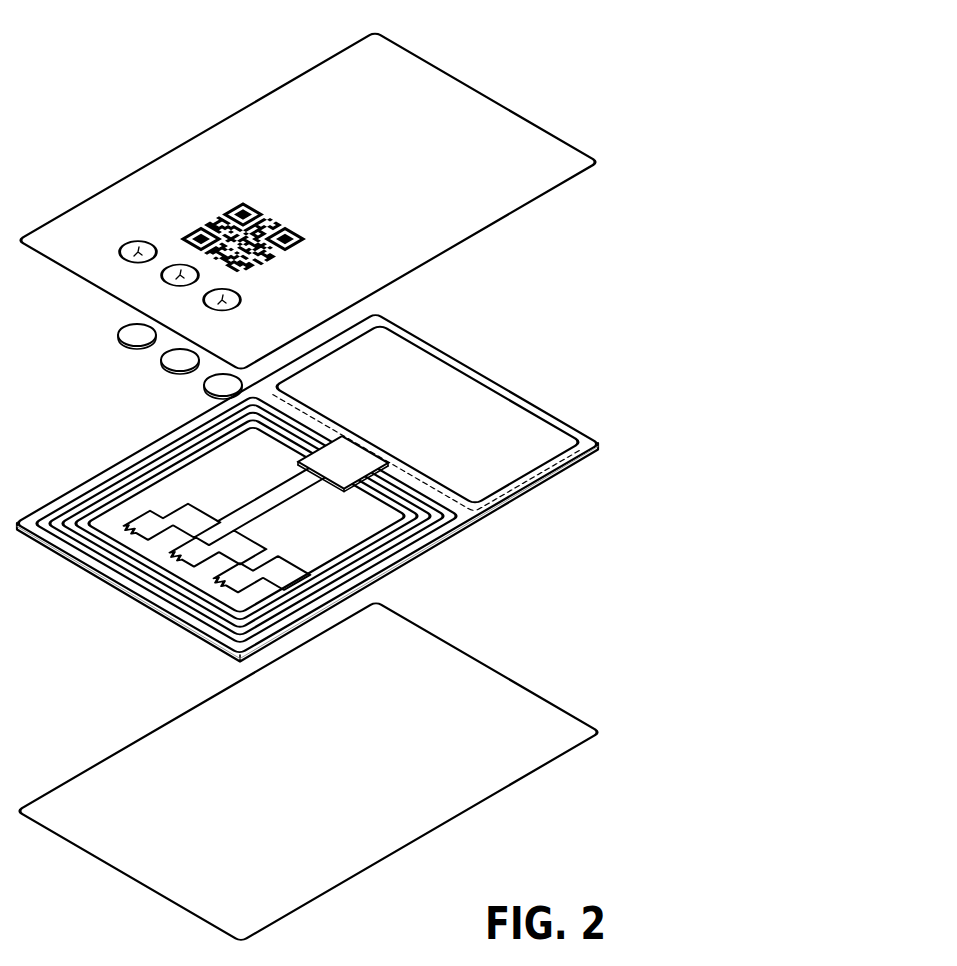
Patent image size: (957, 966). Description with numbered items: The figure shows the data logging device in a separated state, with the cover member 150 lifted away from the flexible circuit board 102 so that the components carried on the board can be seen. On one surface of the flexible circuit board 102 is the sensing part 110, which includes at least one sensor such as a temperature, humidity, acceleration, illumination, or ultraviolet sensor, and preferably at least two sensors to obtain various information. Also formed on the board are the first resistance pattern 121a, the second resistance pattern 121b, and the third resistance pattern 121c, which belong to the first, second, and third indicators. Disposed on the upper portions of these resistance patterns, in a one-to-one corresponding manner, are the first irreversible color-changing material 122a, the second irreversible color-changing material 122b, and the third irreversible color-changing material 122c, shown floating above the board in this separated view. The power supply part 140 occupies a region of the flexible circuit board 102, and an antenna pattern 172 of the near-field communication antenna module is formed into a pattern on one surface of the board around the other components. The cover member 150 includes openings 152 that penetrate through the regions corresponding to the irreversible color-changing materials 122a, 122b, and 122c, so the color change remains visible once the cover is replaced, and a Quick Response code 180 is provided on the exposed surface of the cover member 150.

The flexible circuit board 102 is at (493, 355).
The sensing part 110 is at (361, 432).
The first resistance pattern 121a is at (131, 533).
The second resistance pattern 121b is at (178, 560).
The third resistance pattern 121c is at (219, 585).
The first irreversible color-changing material 122a is at (115, 331).
The second irreversible color-changing material 122b is at (160, 357).
The third irreversible color-changing material 122c is at (205, 382).
The power supply part 140 is at (531, 427).
The cover member 150 is at (491, 76).
The openings 152 is at (214, 303).
The antenna pattern 172 is at (458, 528).
The Quick Response (QR) code 180 is at (202, 215).